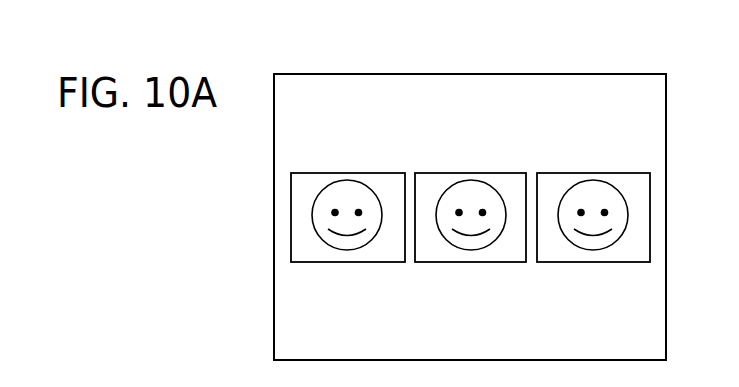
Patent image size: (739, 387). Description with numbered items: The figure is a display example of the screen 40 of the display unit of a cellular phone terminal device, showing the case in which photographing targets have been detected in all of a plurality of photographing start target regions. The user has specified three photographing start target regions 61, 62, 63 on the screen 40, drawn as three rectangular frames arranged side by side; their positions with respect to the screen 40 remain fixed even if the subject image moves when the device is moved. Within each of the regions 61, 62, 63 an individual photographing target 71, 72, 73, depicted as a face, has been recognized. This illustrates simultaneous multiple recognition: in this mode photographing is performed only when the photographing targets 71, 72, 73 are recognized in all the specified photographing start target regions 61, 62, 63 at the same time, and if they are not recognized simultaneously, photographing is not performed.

The screen 40 is at (590, 73).
The photographing start target region 61 is at (312, 172).
The photographing start target region 62 is at (443, 172).
The photographing start target region 63 is at (557, 172).
The photographing target 71 is at (362, 182).
The photographing target 72 is at (486, 182).
The photographing target 73 is at (607, 182).